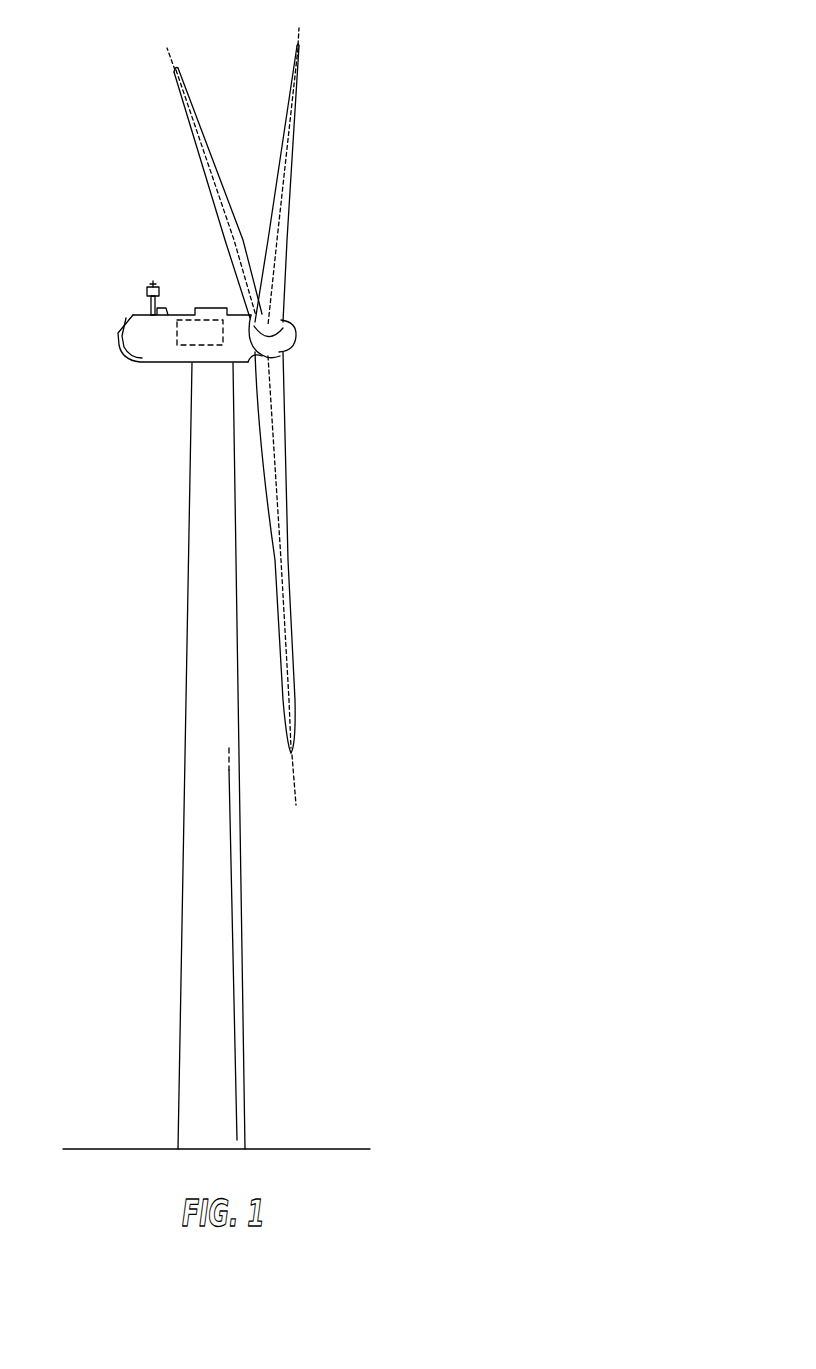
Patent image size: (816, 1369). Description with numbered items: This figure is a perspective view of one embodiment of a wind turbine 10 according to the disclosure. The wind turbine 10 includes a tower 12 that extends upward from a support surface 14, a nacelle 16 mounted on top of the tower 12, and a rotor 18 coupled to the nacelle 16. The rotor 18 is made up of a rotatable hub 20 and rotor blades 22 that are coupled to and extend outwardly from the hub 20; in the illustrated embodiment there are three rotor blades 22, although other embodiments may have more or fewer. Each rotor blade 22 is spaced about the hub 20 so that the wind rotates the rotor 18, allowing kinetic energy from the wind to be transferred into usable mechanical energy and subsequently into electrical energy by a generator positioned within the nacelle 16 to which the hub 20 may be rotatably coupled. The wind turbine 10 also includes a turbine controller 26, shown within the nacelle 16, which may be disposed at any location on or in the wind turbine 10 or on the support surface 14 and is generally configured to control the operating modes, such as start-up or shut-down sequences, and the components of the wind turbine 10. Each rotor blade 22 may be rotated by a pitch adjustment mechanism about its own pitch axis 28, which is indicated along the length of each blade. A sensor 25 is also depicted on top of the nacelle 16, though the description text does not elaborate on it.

The wind turbine 10 is at (424, 116).
The tower 12 is at (198, 820).
The support surface 14 is at (135, 1147).
The nacelle 16 is at (144, 325).
The rotor 18 is at (250, 426).
The rotatable hub 20 is at (295, 344).
The rotor blade 22 is at (276, 203).
The sensor 25 is at (150, 311).
The turbine controller 26 is at (193, 320).
The pitch axis 28 is at (193, 150).